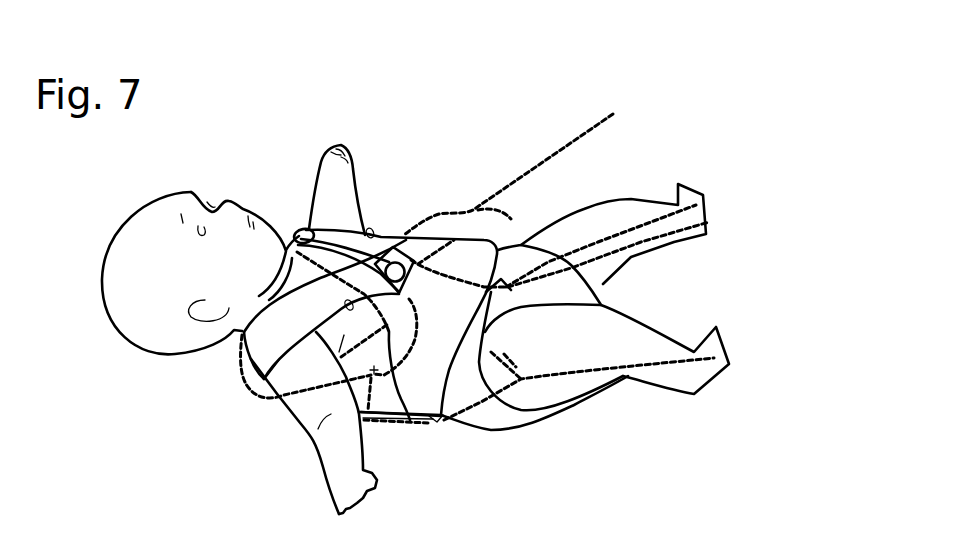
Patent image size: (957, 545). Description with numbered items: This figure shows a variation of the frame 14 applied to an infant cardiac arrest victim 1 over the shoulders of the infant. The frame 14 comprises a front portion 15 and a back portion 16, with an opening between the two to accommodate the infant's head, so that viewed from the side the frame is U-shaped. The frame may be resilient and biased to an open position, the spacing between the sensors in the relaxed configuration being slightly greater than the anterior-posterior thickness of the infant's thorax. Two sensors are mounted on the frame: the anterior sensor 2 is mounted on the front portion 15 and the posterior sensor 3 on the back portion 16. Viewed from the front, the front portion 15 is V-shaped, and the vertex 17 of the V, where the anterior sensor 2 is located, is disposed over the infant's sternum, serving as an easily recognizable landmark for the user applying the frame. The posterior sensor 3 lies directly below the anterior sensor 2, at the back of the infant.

The infant 1 is at (234, 187).
The anterior sensor 2 is at (390, 258).
The posterior sensor 3 is at (409, 416).
The frame 14 is at (307, 219).
The front portion 15 is at (260, 386).
The back portion 16 is at (372, 413).
The vertex 17 is at (403, 238).